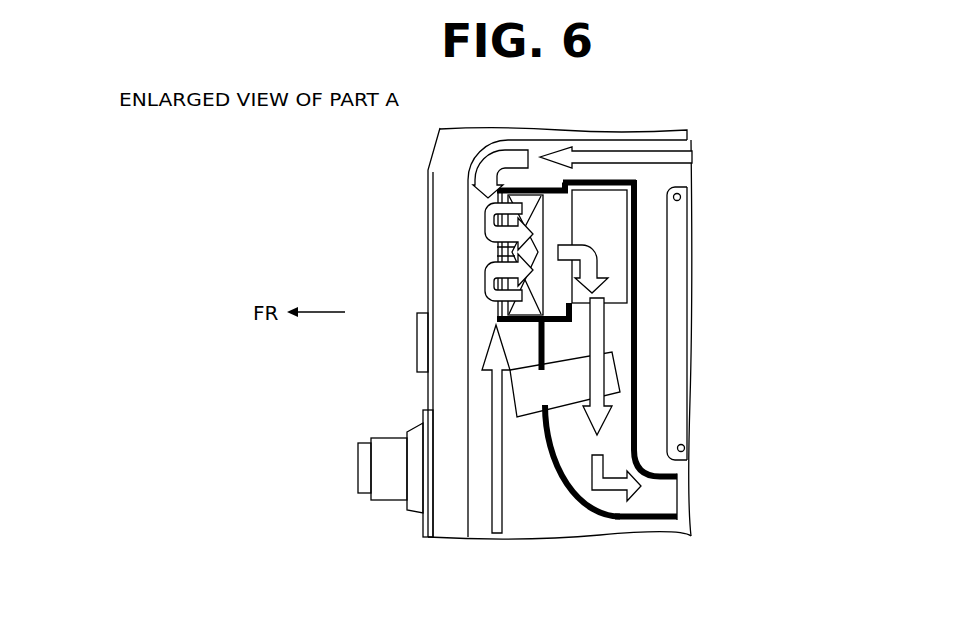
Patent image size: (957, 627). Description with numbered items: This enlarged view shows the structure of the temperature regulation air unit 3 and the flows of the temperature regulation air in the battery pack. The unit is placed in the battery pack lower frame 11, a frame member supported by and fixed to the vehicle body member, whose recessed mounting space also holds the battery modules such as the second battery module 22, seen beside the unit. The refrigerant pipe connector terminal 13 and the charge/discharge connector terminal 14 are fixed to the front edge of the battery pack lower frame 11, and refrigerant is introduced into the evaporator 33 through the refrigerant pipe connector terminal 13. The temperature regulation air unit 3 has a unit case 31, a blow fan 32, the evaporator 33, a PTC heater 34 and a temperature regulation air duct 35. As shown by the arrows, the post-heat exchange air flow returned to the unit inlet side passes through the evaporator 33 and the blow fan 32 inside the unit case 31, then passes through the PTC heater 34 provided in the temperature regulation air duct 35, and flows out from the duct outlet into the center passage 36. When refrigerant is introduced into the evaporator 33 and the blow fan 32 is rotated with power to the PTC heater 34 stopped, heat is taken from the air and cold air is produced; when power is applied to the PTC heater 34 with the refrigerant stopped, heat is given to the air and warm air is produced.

The temperature regulation air unit 3 is at (650, 265).
The battery pack lower frame 11 is at (443, 166).
The refrigerant pipe connector terminal 13 is at (417, 355).
The charge/discharge connector terminal 14 is at (389, 445).
The second battery module 22 is at (678, 313).
The unit case 31 is at (593, 182).
The blow fan 32 is at (598, 222).
The evaporator 33 is at (518, 252).
The PTC heater 34 is at (562, 388).
The temperature regulation air duct 35 is at (636, 395).
The center passage 36 is at (684, 494).